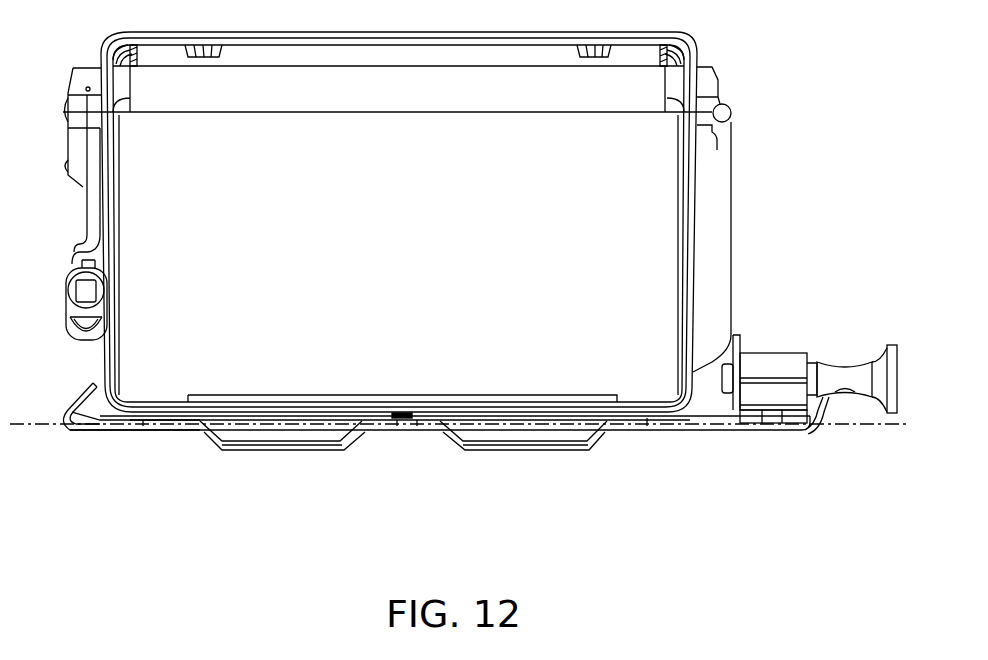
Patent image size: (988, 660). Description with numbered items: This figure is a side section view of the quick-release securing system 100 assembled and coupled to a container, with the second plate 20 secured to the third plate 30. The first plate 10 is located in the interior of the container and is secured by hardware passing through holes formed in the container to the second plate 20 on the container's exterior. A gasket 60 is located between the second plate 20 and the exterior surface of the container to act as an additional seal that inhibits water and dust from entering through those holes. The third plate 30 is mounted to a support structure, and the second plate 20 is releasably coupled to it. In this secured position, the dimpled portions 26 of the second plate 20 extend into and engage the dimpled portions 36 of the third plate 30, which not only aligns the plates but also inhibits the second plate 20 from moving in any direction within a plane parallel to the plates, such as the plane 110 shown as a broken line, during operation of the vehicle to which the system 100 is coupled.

The quick-release securing system 100 is at (817, 297).
The plane 110 is at (44, 425).
The first plate 10 is at (202, 397).
The second plate 20 is at (628, 420).
The gasket 60 is at (493, 413).
The dimpled portions 36 is at (222, 443).
The dimpled portions 26 is at (342, 428).
The third plate 30 is at (782, 420).